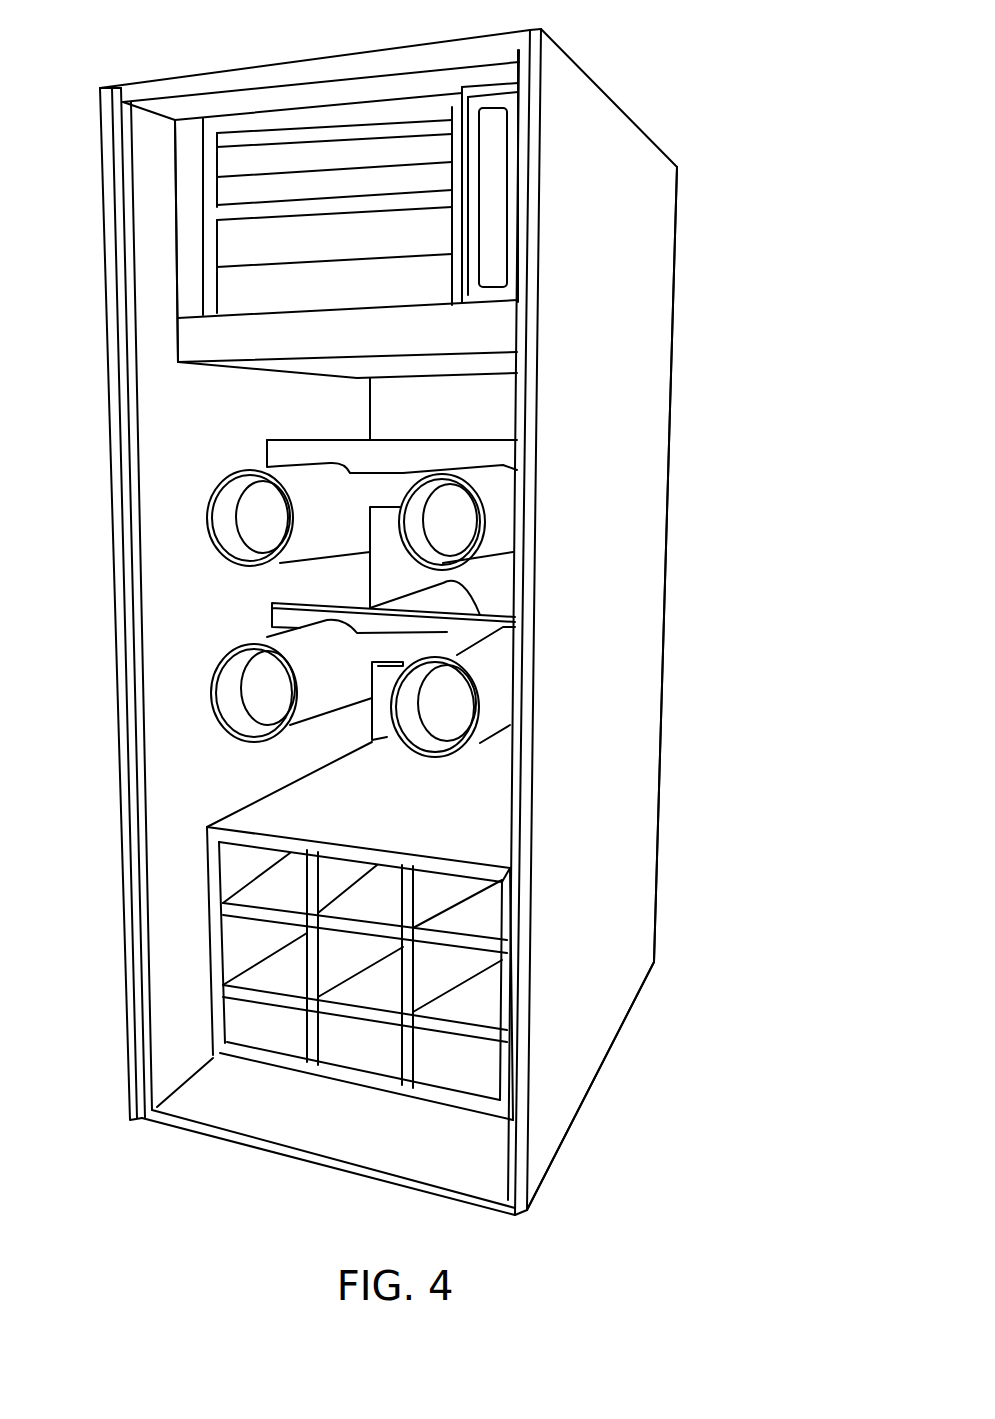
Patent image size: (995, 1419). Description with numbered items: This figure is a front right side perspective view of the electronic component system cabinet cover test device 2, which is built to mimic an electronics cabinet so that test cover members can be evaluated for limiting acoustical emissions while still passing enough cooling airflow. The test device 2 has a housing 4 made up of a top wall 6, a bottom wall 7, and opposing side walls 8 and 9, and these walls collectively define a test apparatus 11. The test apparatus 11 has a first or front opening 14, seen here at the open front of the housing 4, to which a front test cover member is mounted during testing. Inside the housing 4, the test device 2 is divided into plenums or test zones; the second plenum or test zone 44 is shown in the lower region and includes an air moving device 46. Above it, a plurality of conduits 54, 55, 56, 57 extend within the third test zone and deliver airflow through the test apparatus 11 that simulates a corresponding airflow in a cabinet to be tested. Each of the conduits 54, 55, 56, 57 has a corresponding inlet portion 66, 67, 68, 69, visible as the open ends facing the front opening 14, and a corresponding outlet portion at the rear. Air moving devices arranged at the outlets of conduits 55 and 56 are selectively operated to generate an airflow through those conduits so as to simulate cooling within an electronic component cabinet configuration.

The electronic component system cabinet cover test device 2 is at (684, 782).
The housing 4 is at (600, 1058).
The top wall 6 is at (212, 74).
The bottom wall 7 is at (300, 1153).
The side wall 8 is at (111, 473).
The side wall 9 is at (664, 613).
The test apparatus 11 is at (148, 592).
The front opening 14 is at (160, 926).
The second plenum or test zone 44 is at (360, 989).
The air moving device 46 is at (260, 1043).
The conduit 54 is at (280, 475).
The conduit 55 is at (499, 517).
The conduit 56 is at (250, 703).
The conduit 57 is at (495, 713).
The inlet portion 66 is at (224, 523).
The inlet portion 67 is at (468, 523).
The inlet portion 68 is at (248, 727).
The inlet portion 69 is at (428, 745).